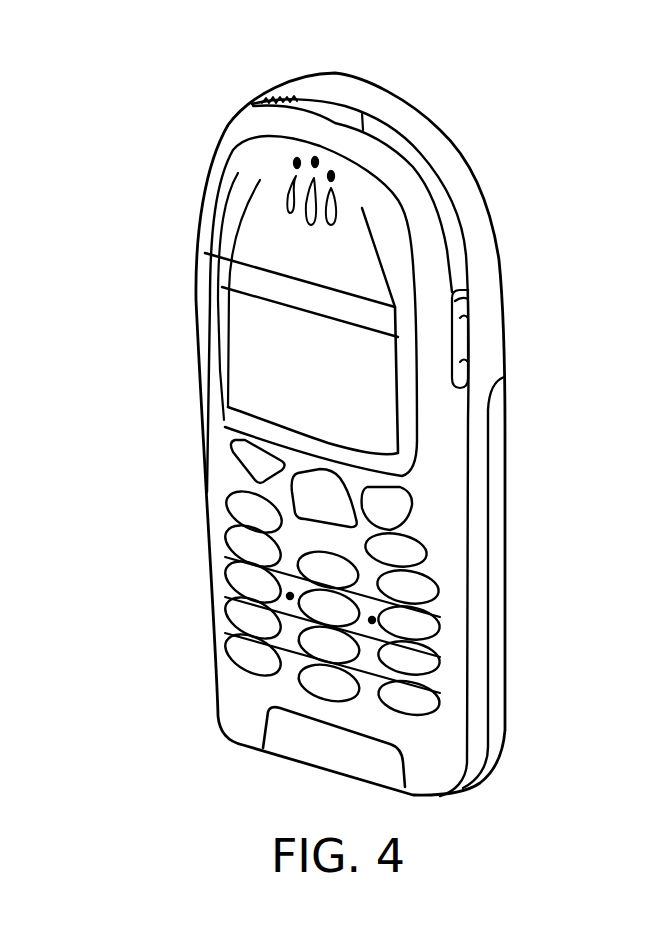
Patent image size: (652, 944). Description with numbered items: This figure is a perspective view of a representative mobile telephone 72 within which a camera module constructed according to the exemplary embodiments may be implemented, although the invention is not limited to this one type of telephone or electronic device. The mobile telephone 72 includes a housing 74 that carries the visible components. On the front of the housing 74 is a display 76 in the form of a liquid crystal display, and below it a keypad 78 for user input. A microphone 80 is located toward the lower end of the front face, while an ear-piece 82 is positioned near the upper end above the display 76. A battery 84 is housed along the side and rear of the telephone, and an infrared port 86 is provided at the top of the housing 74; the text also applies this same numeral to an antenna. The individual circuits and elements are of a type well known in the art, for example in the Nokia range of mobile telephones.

The mobile telephone 72 is at (373, 417).
The housing 74 is at (480, 221).
The display 76 is at (385, 412).
The keypad 78 is at (407, 706).
The microphone 80 is at (280, 738).
The ear-piece 82 is at (290, 184).
The battery 84 is at (497, 687).
The infrared port 86 is at (334, 104).